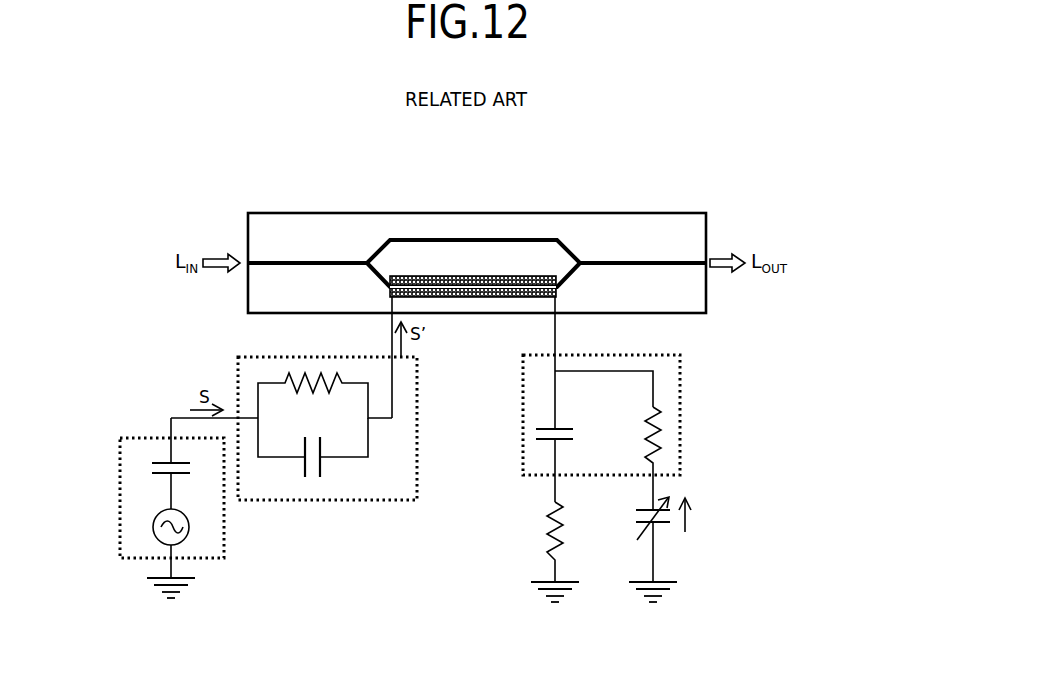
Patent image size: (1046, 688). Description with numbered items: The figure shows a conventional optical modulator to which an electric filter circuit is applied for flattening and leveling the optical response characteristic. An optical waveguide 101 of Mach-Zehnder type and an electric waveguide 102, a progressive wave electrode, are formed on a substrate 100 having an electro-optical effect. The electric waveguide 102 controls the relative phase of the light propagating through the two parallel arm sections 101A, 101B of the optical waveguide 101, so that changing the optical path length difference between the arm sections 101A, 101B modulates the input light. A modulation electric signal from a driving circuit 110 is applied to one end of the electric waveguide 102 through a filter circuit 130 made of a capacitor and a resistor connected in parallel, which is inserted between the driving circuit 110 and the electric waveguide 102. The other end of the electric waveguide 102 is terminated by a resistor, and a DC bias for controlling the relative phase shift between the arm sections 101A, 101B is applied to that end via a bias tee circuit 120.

The substrate 100 is at (302, 212).
The optical waveguide 101 is at (268, 260).
The arm section 101A is at (412, 275).
The arm section 101B is at (445, 238).
The electric waveguide 102 is at (483, 275).
The driving circuit 110 is at (138, 438).
The bias tee circuit 120 is at (680, 405).
The filter circuit 130 is at (238, 378).